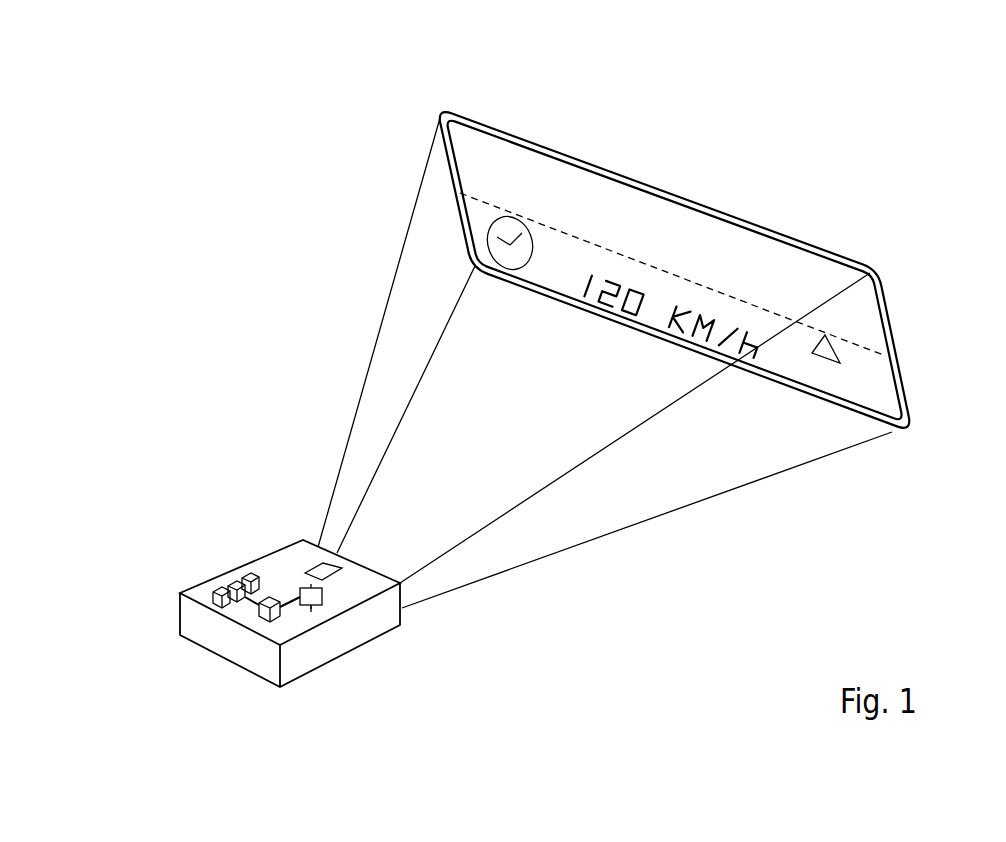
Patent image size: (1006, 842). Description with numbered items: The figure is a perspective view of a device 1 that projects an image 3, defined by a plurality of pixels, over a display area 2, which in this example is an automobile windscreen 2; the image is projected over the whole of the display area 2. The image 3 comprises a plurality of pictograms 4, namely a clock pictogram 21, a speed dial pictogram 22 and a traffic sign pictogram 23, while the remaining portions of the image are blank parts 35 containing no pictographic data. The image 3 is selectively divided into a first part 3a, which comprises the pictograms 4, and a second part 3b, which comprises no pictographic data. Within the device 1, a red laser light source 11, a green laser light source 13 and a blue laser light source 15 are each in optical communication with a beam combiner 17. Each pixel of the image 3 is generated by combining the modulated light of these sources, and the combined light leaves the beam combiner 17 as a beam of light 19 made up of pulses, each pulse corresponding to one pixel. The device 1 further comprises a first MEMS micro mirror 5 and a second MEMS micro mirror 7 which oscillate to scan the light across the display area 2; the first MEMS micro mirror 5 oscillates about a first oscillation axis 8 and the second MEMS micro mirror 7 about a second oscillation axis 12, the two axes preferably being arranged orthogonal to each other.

The device 1 is at (280, 592).
The display area 2 is at (822, 249).
The image 3 is at (858, 303).
The first part 3a is at (550, 282).
The second part 3b is at (607, 187).
The pictograms 4 is at (845, 370).
The first MEMS micro mirror 5 is at (322, 597).
The second MEMS micro mirror 7 is at (323, 566).
The first oscillation axis 8 is at (313, 608).
The red laser light source 11 is at (215, 587).
The second oscillation axis 12 is at (342, 566).
The green laser light source 13 is at (235, 578).
The blue laser light source 15 is at (247, 575).
The beam combiner 17 is at (260, 612).
The beam of light 19 is at (292, 608).
The clock pictogram 21 is at (503, 225).
The speed dial pictogram 22 is at (632, 316).
The traffic sign pictogram 23 is at (833, 352).
The blank parts 35 is at (688, 222).